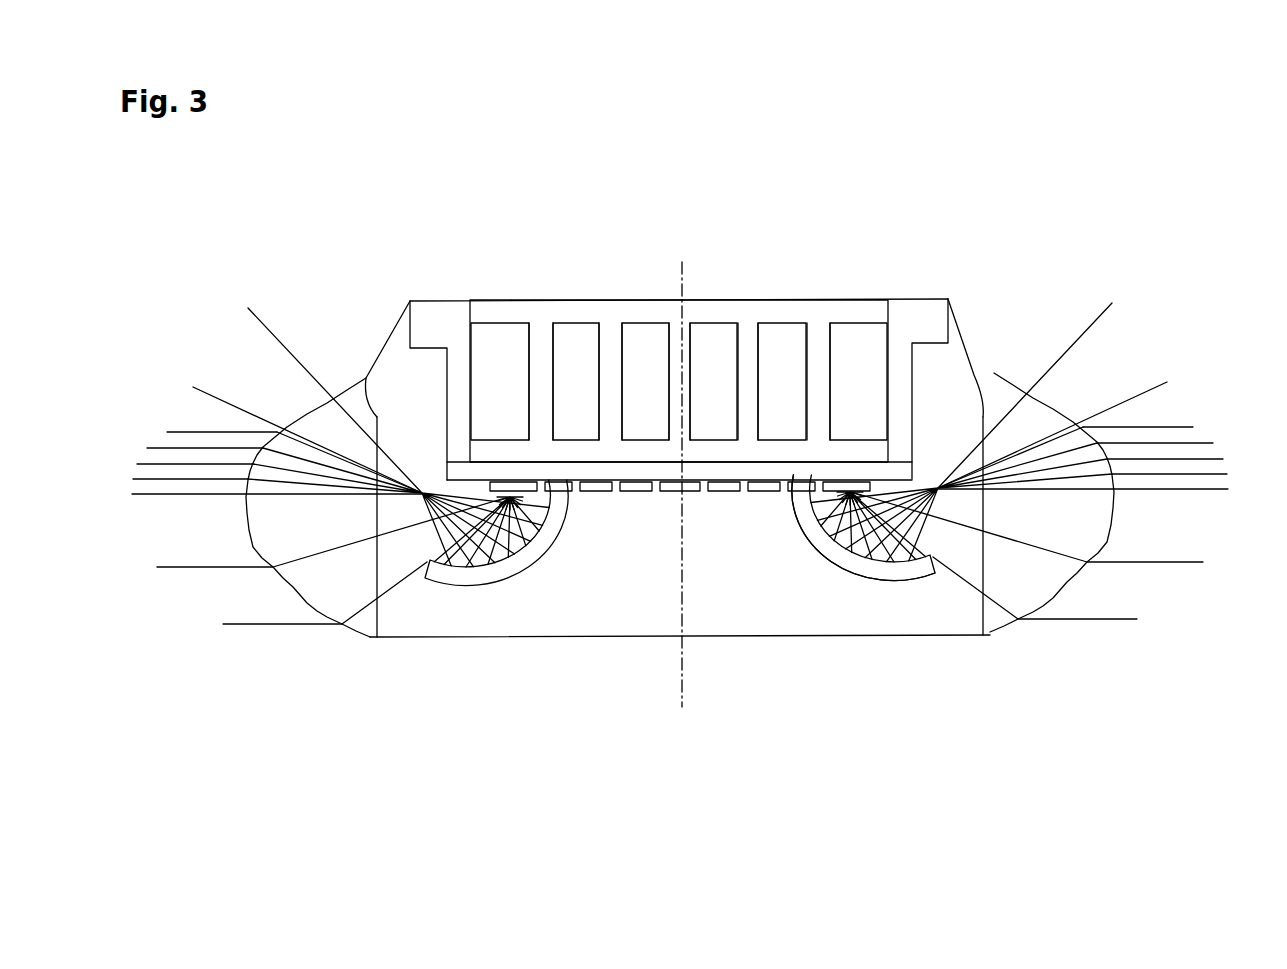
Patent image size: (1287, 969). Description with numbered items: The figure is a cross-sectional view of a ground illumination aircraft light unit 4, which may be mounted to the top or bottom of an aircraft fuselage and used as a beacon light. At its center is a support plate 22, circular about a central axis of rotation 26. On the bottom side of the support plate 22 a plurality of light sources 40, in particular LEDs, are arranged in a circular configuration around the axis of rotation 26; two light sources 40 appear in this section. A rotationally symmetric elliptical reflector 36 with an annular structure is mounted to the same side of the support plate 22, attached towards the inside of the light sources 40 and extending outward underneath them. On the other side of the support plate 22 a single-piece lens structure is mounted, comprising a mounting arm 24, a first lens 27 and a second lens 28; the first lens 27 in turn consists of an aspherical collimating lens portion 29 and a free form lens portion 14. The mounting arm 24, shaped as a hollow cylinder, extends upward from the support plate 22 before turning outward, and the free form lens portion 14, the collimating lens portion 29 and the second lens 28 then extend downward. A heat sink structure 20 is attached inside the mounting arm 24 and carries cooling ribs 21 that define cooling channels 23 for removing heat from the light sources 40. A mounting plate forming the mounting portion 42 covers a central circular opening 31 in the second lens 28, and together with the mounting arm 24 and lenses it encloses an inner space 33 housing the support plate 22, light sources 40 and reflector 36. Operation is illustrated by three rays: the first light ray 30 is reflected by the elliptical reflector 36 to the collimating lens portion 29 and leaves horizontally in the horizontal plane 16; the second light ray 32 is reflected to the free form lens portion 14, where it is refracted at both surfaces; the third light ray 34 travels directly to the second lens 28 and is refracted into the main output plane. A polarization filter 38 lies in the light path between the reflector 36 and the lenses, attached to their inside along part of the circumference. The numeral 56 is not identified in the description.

The ground illumination aircraft light unit 4 is at (962, 197).
The free form lens portion 14 is at (363, 360).
The horizontal plane 16 is at (140, 495).
The heat sink structure 20 is at (690, 307).
The cooling ribs 21 is at (540, 357).
The support plate 22 is at (905, 472).
The cooling channels 23 is at (505, 355).
The mounting arm 24 is at (910, 298).
The axis of rotation 26 is at (694, 647).
The first lens 27 is at (240, 365).
The second lens 28 is at (247, 531).
The aspherical collimating lens portion 29 is at (278, 432).
The first light ray 30 is at (1205, 457).
The central circular opening 31 is at (530, 665).
The second light ray 32 is at (1067, 335).
The inner space 33 is at (627, 540).
The third light ray 34 is at (958, 580).
The elliptical reflector 36 is at (470, 590).
The polarization filter 38 is at (983, 432).
The light sources 40 is at (545, 552).
The mounting portion 42 is at (630, 640).
The housing base 56 is at (355, 668).